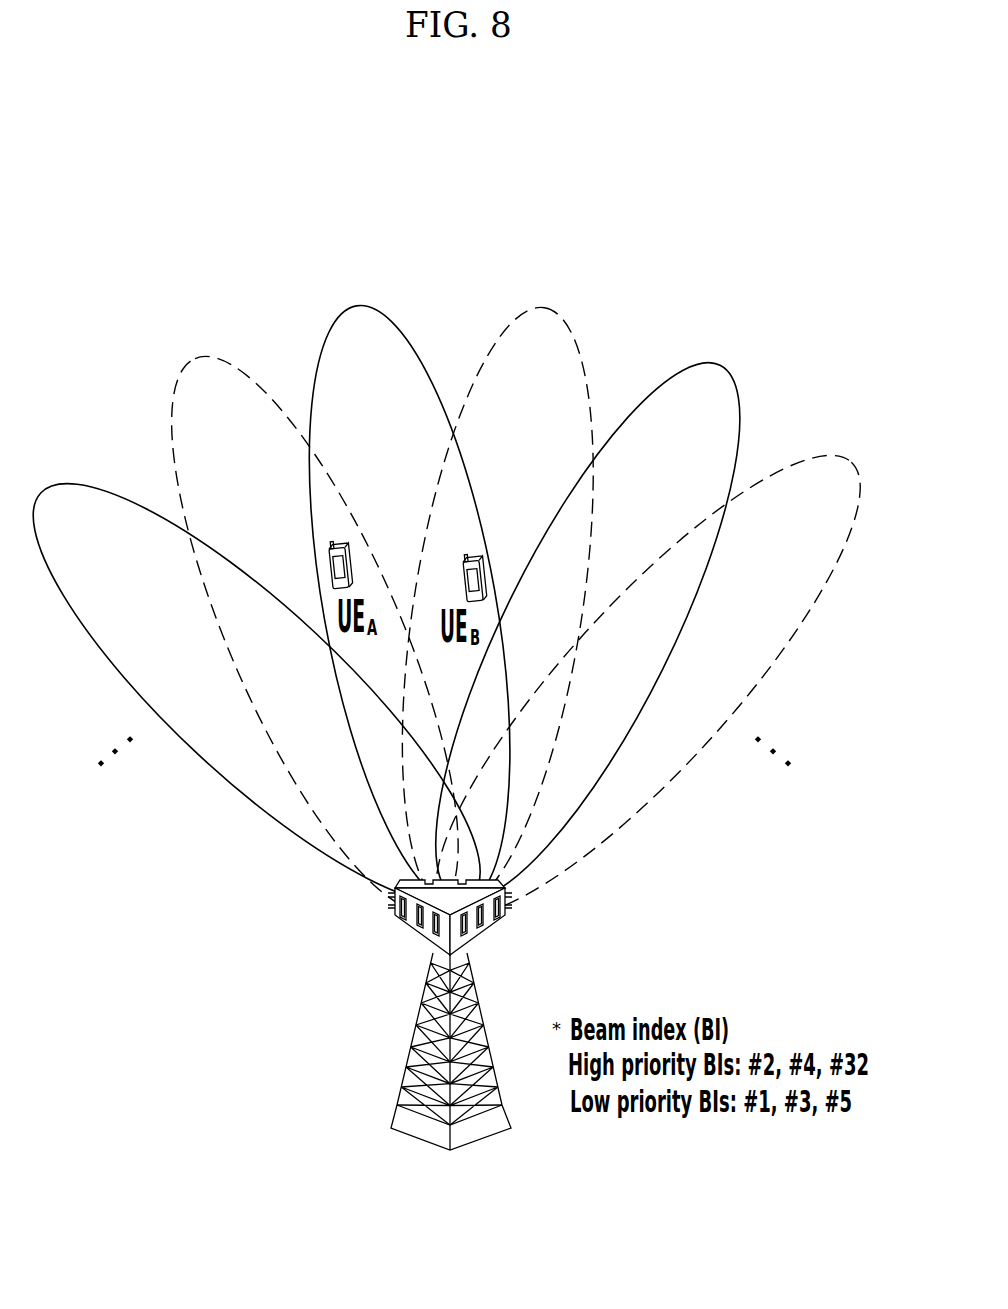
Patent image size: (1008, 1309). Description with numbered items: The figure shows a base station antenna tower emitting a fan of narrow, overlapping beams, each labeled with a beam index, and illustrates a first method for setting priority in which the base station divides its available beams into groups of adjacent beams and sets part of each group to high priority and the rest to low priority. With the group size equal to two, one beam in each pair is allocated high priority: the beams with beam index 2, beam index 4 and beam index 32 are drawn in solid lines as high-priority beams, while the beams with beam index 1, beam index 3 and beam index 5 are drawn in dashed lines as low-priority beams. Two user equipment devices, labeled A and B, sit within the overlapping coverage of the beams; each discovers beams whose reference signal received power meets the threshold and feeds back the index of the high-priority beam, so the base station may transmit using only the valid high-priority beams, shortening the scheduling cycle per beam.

The beam index # 1 is at (315, 633).
The beam index # 2 is at (409, 605).
The beam index # 3 is at (498, 608).
The beam index # 4 is at (588, 631).
The beam index # 5 is at (649, 685).
The beam index # 32 is at (265, 693).